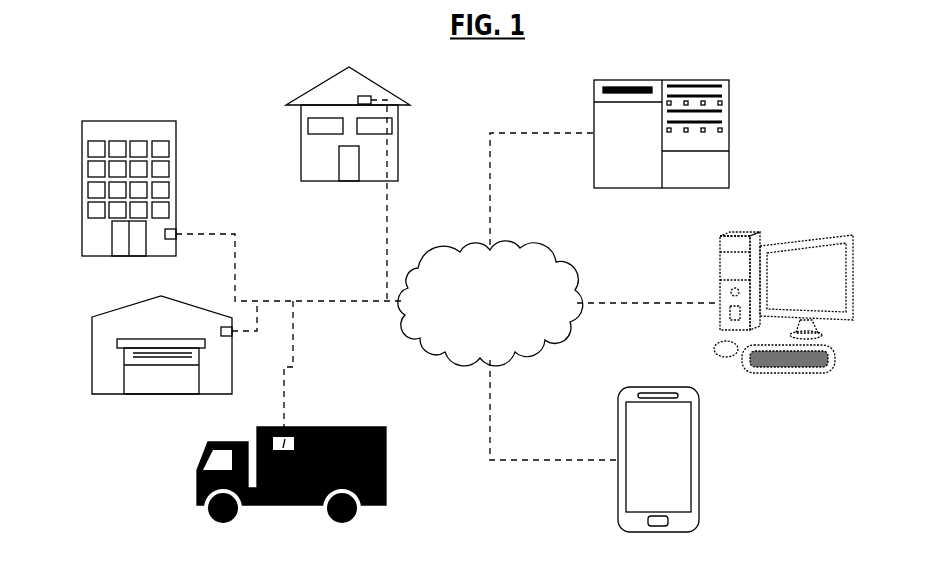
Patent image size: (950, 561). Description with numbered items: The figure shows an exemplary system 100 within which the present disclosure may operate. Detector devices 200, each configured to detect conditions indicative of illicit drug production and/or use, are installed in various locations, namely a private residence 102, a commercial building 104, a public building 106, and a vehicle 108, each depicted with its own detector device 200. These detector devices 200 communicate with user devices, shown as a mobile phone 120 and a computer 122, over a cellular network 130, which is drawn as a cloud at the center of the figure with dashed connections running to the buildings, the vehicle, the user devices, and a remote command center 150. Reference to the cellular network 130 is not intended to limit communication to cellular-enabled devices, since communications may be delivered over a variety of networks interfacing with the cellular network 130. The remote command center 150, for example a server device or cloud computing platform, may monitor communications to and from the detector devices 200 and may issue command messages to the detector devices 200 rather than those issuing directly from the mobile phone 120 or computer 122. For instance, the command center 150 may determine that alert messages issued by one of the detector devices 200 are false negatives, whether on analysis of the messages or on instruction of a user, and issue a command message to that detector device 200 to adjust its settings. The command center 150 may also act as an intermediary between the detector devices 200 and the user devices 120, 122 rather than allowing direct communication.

The system 100 is at (830, 115).
The private residence 102 is at (300, 120).
The commercial building 104 is at (107, 394).
The public building 106 is at (115, 121).
The vehicle 108 is at (387, 498).
The mobile phone 120 is at (700, 498).
The computer 122 is at (767, 235).
The cellular network 130 is at (555, 252).
The remote command center 150 is at (594, 110).
The detector device 200 is at (358, 100).